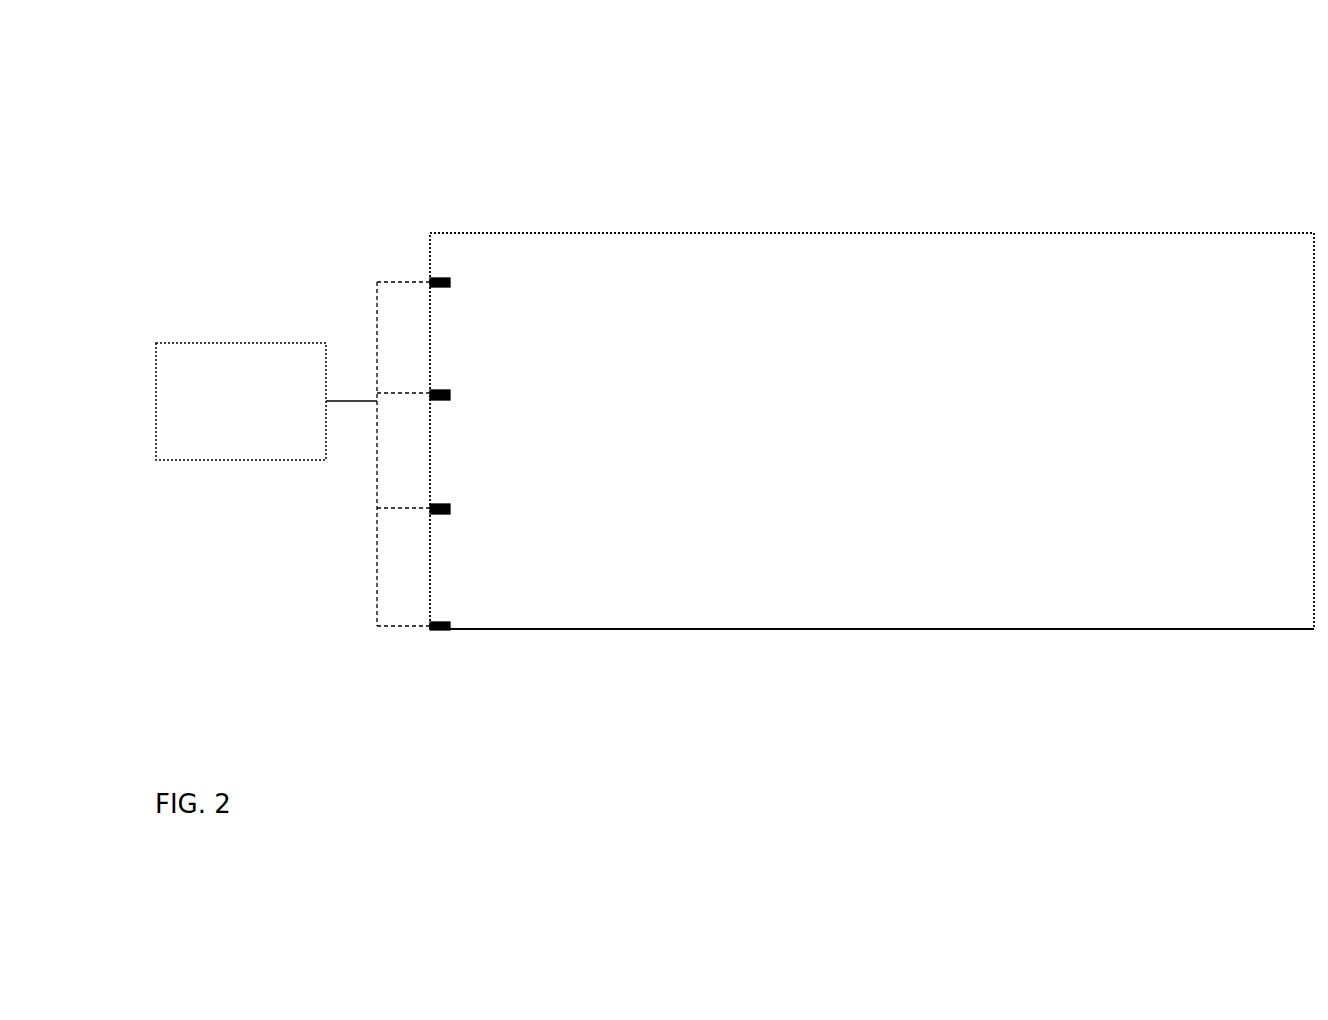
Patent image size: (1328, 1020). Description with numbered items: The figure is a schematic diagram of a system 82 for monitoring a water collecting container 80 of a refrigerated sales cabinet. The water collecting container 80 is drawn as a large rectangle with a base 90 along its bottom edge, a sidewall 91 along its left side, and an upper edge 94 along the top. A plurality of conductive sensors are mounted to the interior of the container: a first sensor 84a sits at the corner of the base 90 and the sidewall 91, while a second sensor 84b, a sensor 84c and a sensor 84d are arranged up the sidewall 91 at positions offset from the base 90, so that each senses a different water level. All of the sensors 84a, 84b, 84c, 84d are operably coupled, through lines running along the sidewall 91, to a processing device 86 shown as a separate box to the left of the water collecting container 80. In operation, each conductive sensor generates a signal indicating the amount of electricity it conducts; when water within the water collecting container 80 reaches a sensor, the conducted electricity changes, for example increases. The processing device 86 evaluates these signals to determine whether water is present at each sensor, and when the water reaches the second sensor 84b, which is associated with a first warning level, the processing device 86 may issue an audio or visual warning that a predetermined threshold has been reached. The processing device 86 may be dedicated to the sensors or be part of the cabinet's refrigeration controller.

The water collecting container 80 is at (872, 431).
The system 82 is at (256, 157).
The first sensor 84a is at (443, 630).
The second sensor 84b is at (450, 282).
The sensor 84c is at (450, 392).
The sensor 84d is at (450, 507).
The processing device 86 is at (266, 401).
The base 90 is at (571, 629).
The sidewall 91 is at (430, 596).
The top edge 94 is at (496, 233).